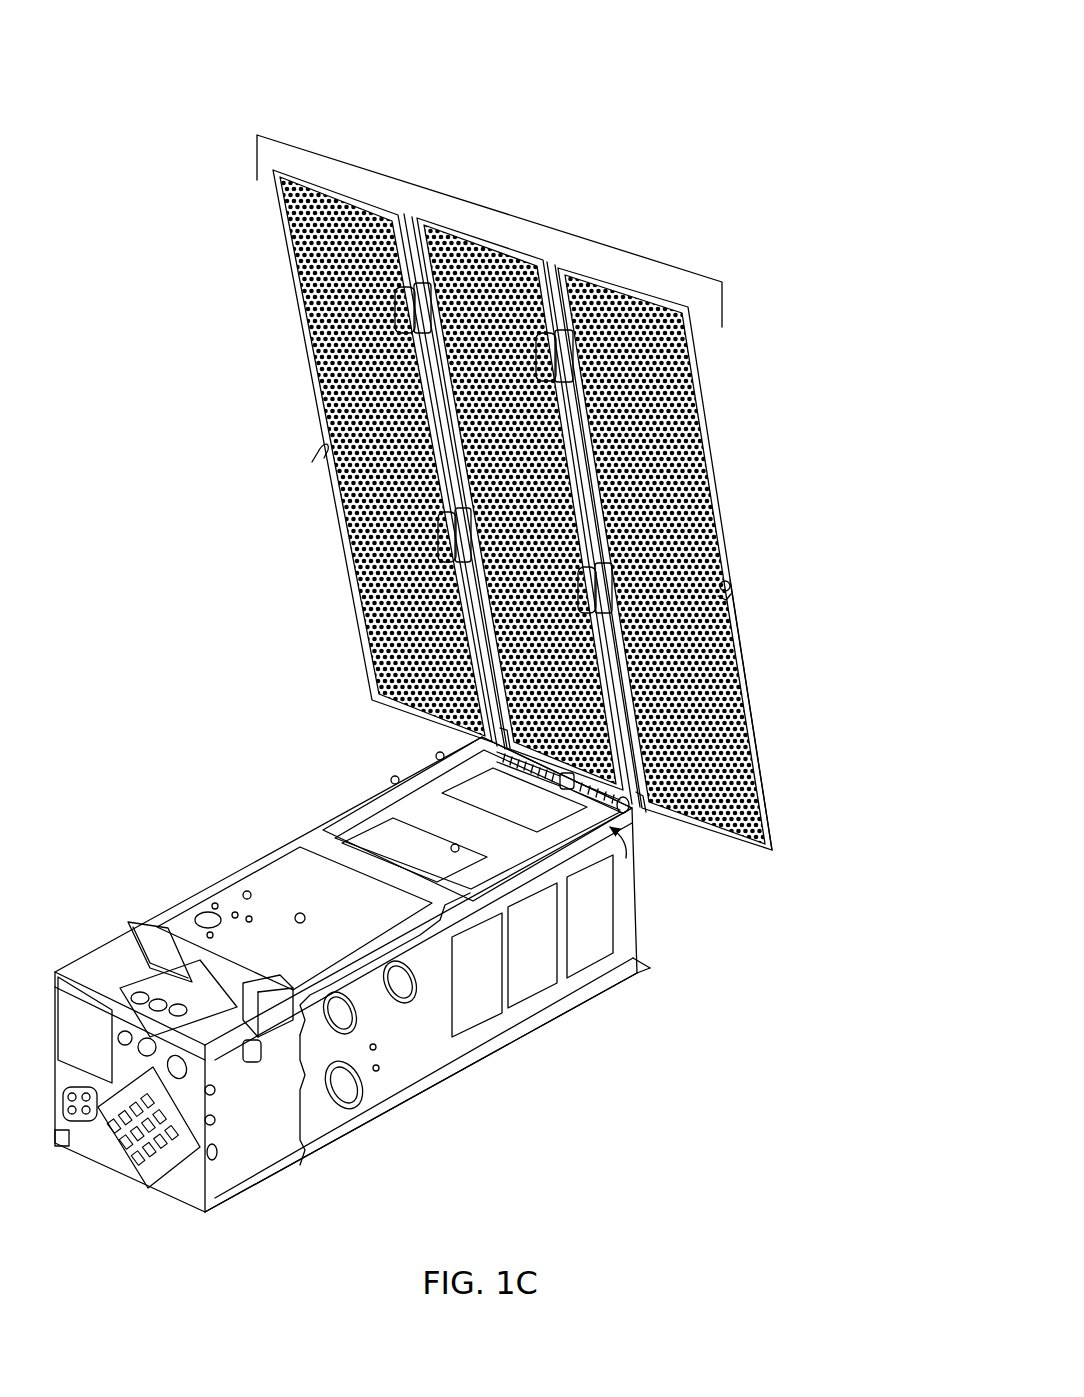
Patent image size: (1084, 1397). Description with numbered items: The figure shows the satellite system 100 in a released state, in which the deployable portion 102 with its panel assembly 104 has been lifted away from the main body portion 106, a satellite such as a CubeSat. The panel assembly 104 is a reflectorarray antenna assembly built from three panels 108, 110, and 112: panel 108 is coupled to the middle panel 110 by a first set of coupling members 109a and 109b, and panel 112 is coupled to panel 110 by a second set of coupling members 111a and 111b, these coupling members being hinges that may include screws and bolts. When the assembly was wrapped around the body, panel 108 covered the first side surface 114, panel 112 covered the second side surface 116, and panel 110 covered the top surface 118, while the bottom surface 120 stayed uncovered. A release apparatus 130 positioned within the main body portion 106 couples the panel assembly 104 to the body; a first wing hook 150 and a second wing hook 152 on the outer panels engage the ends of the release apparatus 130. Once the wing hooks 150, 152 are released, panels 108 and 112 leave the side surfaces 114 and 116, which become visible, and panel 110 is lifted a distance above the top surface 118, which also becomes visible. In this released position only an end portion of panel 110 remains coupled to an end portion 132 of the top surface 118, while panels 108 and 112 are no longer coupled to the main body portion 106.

The system 100 is at (452, 93).
The deployable portion 102 is at (762, 375).
The panel assembly 104 is at (645, 253).
The main body portion 106 is at (586, 1076).
The panel 108 is at (335, 190).
The coupling member 109a is at (406, 288).
The coupling member 109b is at (773, 800).
The panel 110 is at (457, 235).
The coupling member 111a is at (545, 335).
The coupling member 111b is at (733, 592).
The panel 112 is at (705, 287).
The first side surface 114 is at (157, 920).
The second side surface 116 is at (396, 1038).
The top surface 118 is at (312, 890).
The bottom surface 120 is at (314, 1155).
The release apparatus 130 is at (645, 810).
The end portion 132 is at (642, 812).
The first wing hook 150 is at (733, 600).
The second wing hook 152 is at (300, 468).